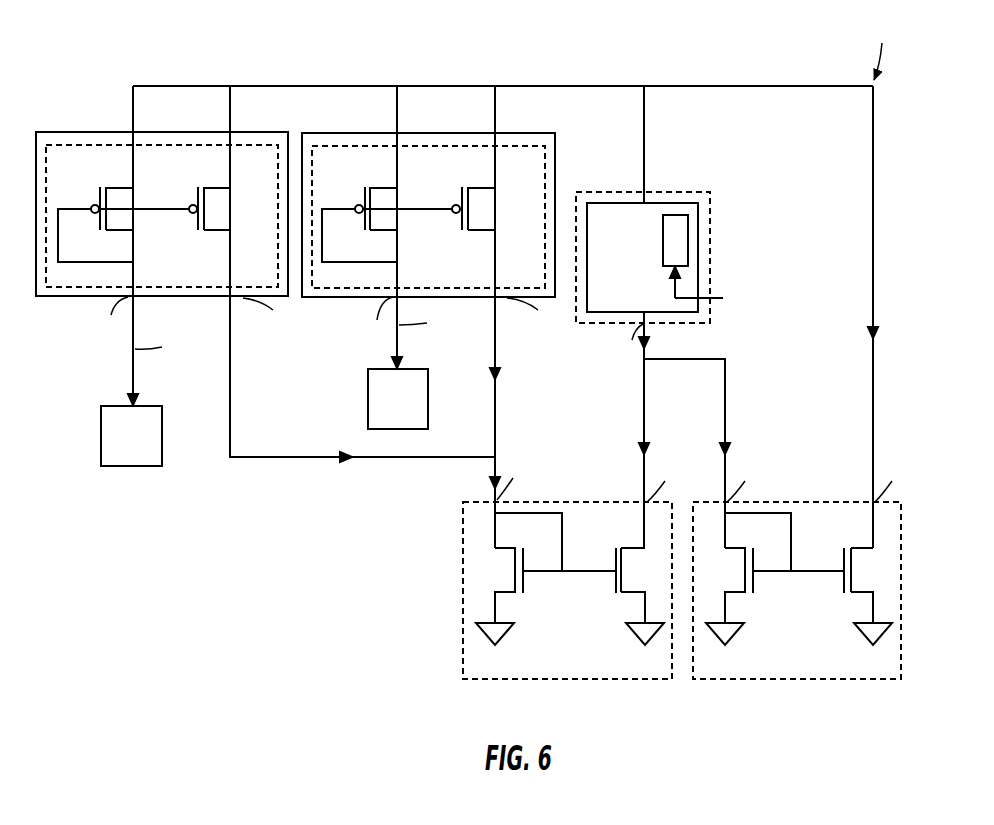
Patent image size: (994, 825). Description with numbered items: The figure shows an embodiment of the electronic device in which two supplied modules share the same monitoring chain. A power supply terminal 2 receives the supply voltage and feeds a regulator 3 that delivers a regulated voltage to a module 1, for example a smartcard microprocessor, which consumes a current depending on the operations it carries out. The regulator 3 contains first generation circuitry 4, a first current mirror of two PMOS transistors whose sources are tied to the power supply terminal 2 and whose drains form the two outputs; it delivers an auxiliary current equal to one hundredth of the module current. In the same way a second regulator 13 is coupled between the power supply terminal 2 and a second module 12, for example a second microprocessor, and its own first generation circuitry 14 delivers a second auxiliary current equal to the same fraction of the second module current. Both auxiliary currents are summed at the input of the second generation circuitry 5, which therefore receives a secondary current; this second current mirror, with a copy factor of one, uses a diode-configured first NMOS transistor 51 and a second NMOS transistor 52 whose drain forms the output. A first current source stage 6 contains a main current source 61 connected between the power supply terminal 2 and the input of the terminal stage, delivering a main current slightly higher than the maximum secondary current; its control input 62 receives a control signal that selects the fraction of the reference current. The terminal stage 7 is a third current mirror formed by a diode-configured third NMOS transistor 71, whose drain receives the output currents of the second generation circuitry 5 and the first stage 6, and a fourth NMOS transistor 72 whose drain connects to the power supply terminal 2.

The module 1 is at (101, 437).
The power supply terminal 2 is at (394, 86).
The regulator 3 is at (322, 133).
The first generation circuitry 4 is at (430, 146).
The second generation circuitry 5 is at (575, 500).
The first current source stage 6 is at (712, 218).
The terminal stage 7 is at (795, 500).
The second module 12 is at (368, 398).
The second regulator 13 is at (56, 132).
The first generation circuitry 14 is at (178, 145).
The first NMOS transistor 51 is at (489, 574).
The second NMOS transistor 52 is at (649, 574).
The main current source 61 is at (700, 258).
The control input 62 is at (663, 240).
The third NMOS transistor 71 is at (719, 574).
The fourth NMOS transistor 72 is at (877, 574).